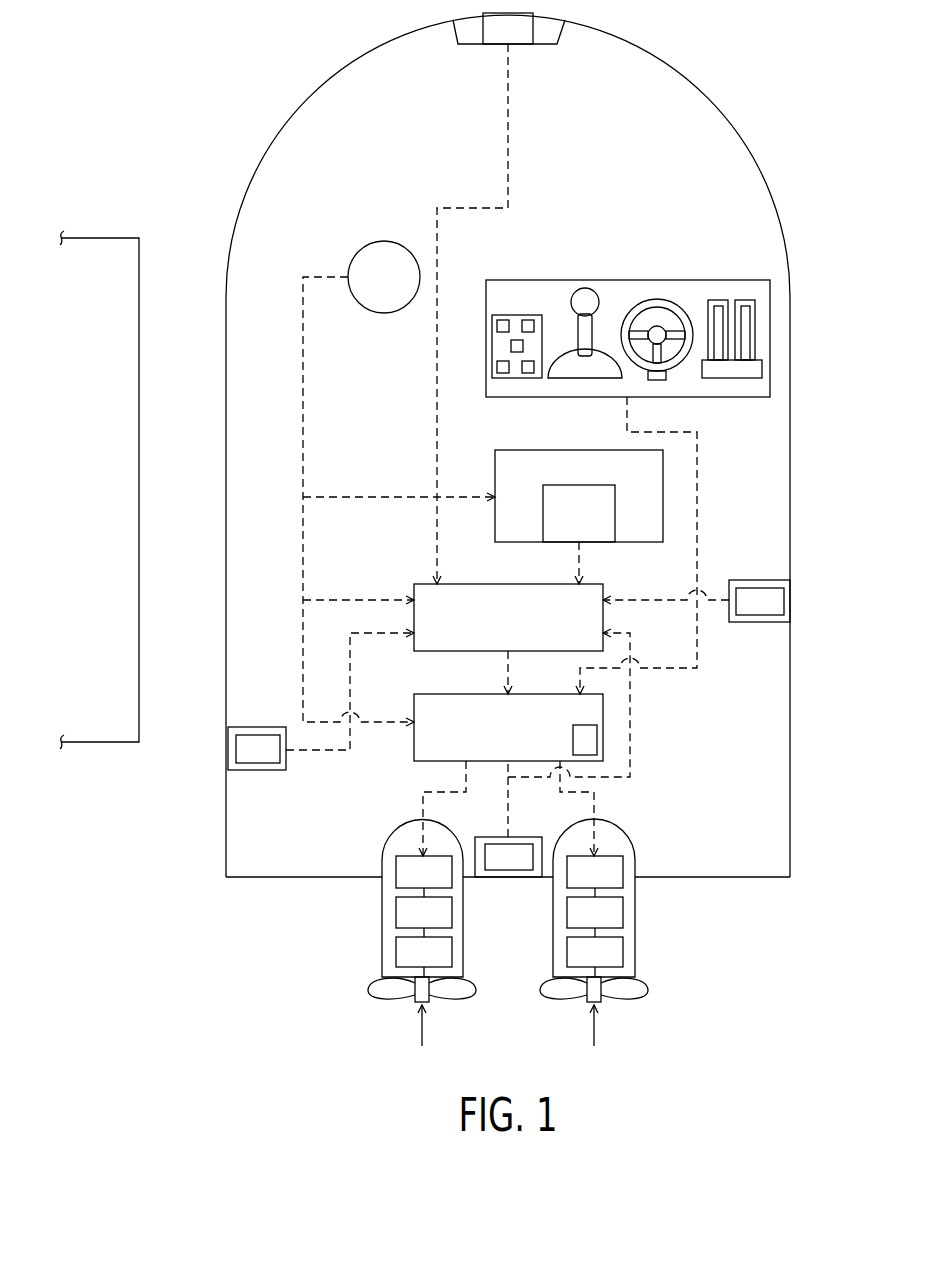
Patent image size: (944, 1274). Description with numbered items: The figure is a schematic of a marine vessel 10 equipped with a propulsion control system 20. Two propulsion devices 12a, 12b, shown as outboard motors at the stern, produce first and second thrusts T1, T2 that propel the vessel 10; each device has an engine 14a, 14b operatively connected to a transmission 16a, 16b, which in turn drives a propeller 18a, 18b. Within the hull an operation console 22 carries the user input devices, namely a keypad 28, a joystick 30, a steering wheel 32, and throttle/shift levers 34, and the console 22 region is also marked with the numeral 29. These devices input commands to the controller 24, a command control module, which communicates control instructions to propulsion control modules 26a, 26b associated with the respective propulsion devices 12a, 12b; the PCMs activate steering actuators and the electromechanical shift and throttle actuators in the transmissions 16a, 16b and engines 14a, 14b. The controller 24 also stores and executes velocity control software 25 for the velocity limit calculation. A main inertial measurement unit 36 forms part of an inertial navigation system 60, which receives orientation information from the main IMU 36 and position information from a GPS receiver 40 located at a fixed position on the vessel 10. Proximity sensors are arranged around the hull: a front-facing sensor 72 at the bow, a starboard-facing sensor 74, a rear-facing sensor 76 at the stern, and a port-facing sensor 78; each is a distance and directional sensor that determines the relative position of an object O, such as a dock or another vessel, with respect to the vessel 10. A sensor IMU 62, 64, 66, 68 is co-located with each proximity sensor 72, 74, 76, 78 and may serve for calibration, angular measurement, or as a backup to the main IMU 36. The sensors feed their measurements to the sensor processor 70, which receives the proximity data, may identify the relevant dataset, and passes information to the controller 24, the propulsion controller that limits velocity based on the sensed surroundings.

The marine vessel 10 is at (768, 187).
The propulsion control system 20 is at (677, 132).
The first propulsion device 12a is at (405, 823).
The second propulsion device 12b is at (611, 823).
The engine 14a is at (396, 912).
The engine 14b is at (623, 912).
The transmission 16a is at (396, 952).
The transmission 16b is at (623, 952).
The propeller 18a is at (368, 990).
The propeller 18b is at (648, 990).
The operation console 22 is at (595, 280).
The controller 24 is at (603, 718).
The velocity control software 25 is at (597, 748).
The propulsion control module 26a is at (404, 856).
The propulsion control module 26b is at (614, 856).
The keypad 28 is at (512, 315).
The operator input devices 29 is at (556, 322).
The joystick 30 is at (592, 334).
The steering wheel 32 is at (657, 298).
The throttle/shift levers 34 is at (717, 300).
The main inertial measurement unit 36 is at (580, 485).
The GPS receiver 40 is at (363, 248).
The inertial navigation system 60 is at (518, 450).
The sensor IMU 62 is at (520, 44).
The sensor IMU 64 is at (748, 580).
The sensor IMU 66 is at (515, 837).
The sensor IMU 68 is at (232, 770).
The sensor processor 70 is at (508, 584).
The front-facing proximity sensor 72 is at (540, 30).
The starboard-facing proximity sensor 74 is at (773, 580).
The rear-facing proximity sensor 76 is at (508, 877).
The port-facing proximity sensor 78 is at (232, 727).
The first thrust T1 is at (422, 1030).
The second thrust T2 is at (594, 1030).
The object O is at (102, 501).